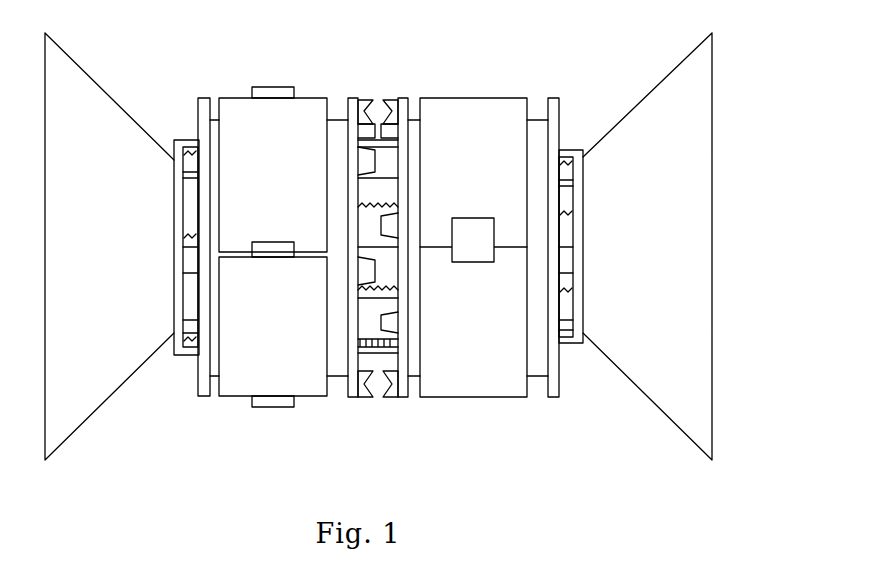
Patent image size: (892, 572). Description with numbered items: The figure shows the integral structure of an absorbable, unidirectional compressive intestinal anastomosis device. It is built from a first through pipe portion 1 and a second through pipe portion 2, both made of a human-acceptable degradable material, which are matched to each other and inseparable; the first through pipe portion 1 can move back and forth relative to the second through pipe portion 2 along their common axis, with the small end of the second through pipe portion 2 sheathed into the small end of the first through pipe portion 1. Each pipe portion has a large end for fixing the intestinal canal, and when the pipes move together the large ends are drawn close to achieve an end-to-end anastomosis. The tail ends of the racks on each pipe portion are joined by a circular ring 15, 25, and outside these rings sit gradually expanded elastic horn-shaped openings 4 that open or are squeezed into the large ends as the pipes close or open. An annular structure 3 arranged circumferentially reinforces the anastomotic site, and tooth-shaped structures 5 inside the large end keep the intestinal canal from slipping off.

The first through pipe portion 1 is at (213, 132).
The second through pipe portion 2 is at (538, 130).
The annular structure 3 is at (310, 103).
The elastic horn-shaped opening 4 is at (698, 203).
The tooth-shaped structure 5 is at (396, 101).
The circular ring 15 is at (180, 148).
The circular ring 25 is at (577, 170).